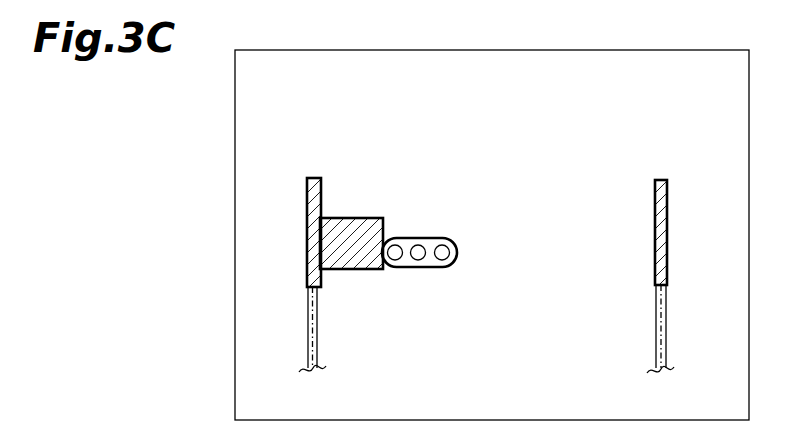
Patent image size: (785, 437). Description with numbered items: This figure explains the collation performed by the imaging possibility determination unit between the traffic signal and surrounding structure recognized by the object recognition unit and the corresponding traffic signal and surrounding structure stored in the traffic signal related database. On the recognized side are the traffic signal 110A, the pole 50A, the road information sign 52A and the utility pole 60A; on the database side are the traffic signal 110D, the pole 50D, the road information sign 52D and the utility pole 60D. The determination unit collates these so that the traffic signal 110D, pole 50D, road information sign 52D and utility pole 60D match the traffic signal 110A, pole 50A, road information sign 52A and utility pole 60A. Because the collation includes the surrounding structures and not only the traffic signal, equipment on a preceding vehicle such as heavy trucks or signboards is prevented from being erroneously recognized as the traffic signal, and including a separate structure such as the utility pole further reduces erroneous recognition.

The pole 50A is at (312, 178).
The pole 50D is at (308, 330).
The road information sign 52A is at (350, 218).
The road information sign 52D is at (347, 270).
The traffic signal 110A is at (432, 238).
The traffic signal 110D is at (420, 270).
The utility pole 60A is at (660, 180).
The utility pole 60D is at (656, 326).